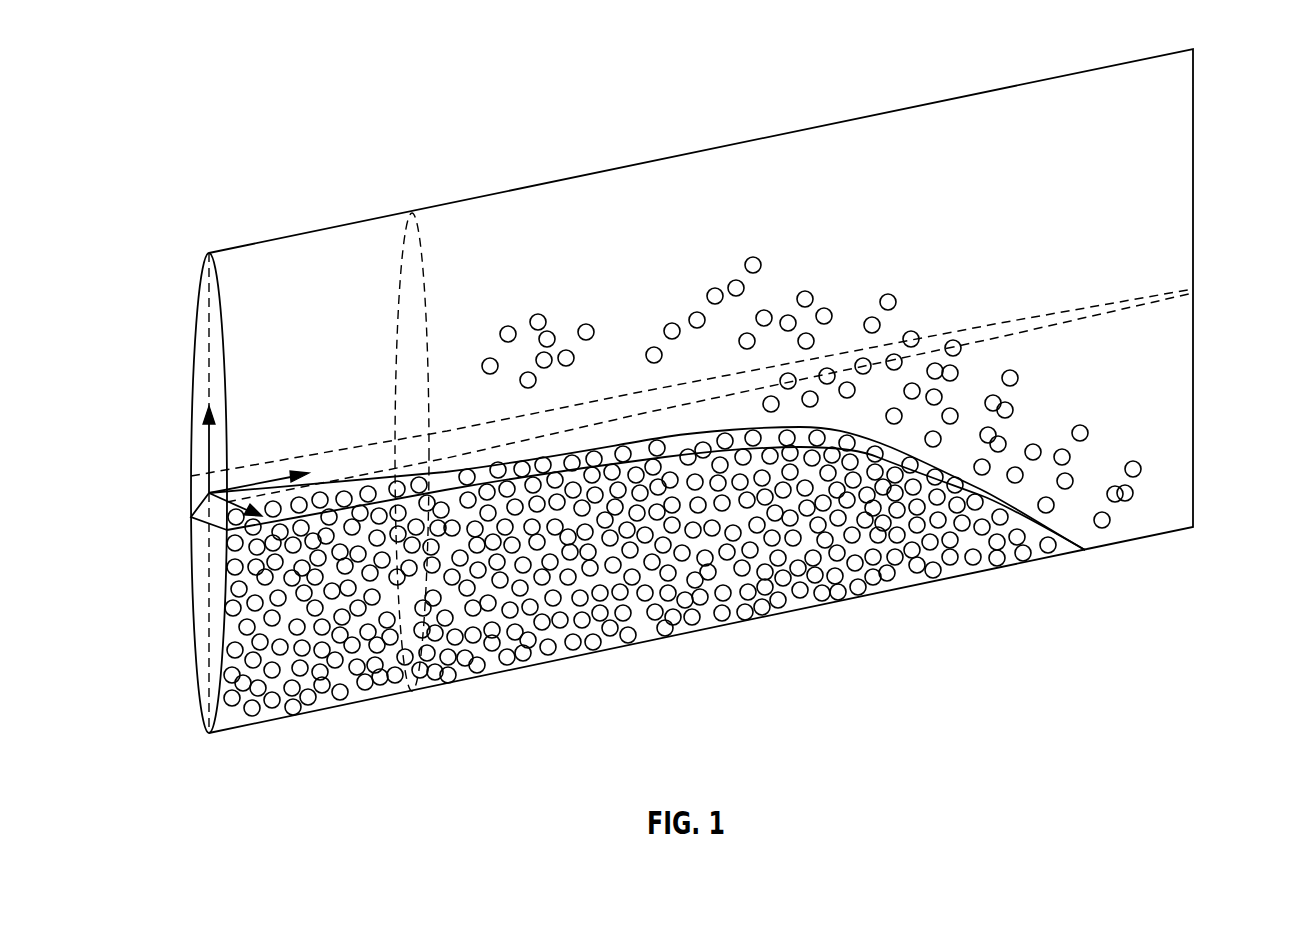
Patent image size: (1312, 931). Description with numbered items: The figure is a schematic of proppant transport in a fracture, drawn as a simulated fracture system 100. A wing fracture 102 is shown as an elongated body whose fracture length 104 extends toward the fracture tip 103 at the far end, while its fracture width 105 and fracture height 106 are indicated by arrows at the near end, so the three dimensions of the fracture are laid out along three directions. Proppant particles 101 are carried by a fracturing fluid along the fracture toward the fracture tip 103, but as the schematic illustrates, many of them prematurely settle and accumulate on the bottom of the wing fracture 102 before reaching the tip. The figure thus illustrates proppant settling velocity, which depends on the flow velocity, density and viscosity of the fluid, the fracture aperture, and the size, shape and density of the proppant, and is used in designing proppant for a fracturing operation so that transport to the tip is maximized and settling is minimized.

The simulated fracture system 100 is at (230, 94).
The proppant particles 101 is at (545, 315).
The wing fracture 102 is at (935, 102).
The fracture tip 103 is at (1193, 290).
The fracture length 104 is at (262, 479).
The fracture width 105 is at (208, 522).
The fracture height 106 is at (209, 448).